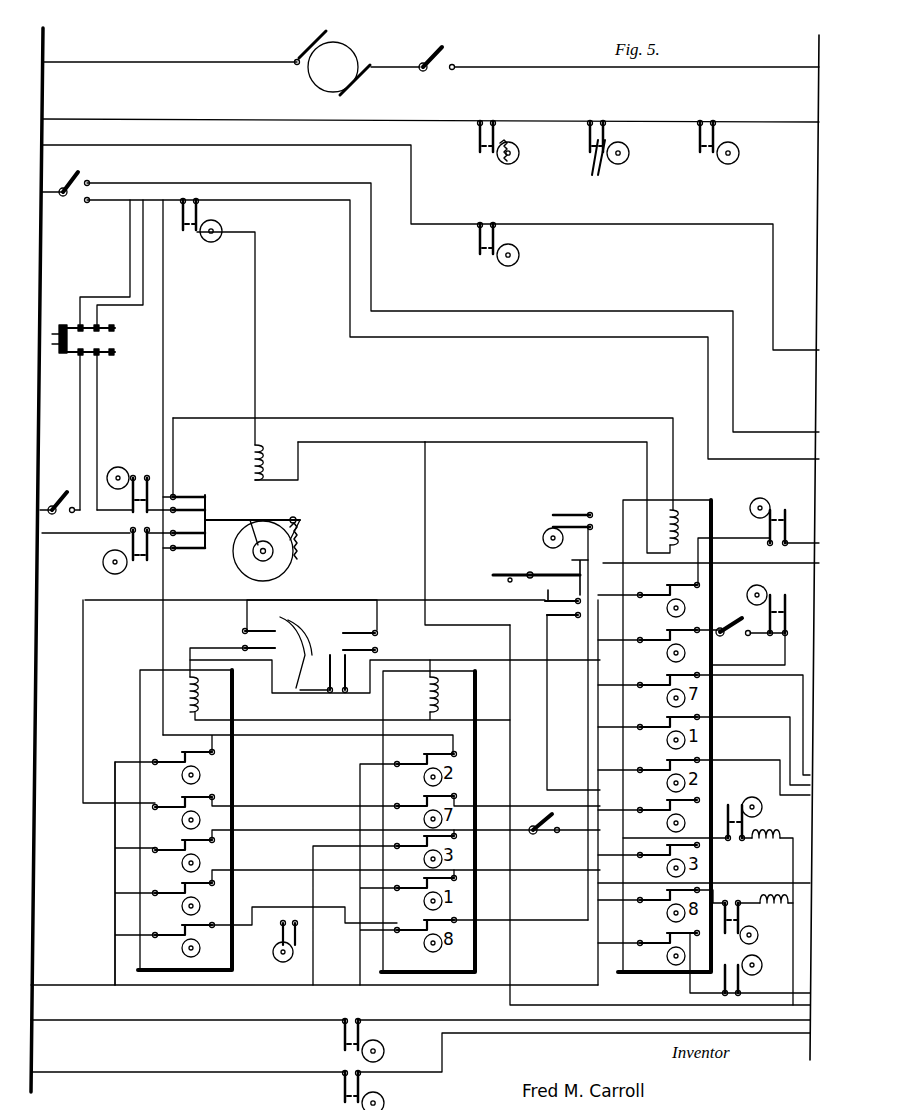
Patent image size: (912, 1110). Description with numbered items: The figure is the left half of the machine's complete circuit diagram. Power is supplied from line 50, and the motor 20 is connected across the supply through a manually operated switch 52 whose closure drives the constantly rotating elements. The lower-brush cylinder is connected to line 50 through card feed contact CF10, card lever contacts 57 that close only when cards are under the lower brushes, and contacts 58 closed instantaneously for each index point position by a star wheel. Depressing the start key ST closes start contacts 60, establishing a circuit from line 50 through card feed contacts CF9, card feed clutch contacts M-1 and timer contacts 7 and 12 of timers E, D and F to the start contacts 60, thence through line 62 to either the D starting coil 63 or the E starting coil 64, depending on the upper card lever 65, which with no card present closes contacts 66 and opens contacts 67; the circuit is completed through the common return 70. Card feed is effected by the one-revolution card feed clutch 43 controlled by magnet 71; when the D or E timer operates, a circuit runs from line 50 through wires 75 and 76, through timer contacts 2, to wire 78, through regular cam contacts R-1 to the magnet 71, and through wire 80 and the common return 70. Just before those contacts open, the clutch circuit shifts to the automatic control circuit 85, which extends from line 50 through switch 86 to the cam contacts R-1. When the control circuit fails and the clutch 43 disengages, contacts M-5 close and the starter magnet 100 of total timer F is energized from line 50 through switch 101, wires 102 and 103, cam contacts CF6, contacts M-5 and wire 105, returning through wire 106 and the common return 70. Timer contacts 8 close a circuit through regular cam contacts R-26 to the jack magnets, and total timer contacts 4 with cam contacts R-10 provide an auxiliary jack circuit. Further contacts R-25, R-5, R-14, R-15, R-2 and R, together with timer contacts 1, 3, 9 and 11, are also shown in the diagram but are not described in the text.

The line 50 is at (45, 44).
The motor 20 is at (345, 55).
The manually operated switch 52 is at (446, 52).
The switch 86 is at (83, 180).
The automatic control circuit 85 is at (588, 311).
The contacts 58 is at (478, 150).
The card lever contacts 57 is at (600, 150).
The card feed contact CF10 is at (738, 155).
The relay contact R-25 is at (516, 245).
The regular cam contacts R-1 is at (208, 268).
The wire 102 is at (79, 398).
The wire 103 is at (97, 398).
The switch 101 is at (56, 495).
The cam contacts CF6 is at (133, 478).
The card feed contacts CF9 is at (131, 563).
The wire 78 is at (160, 625).
The contacts M-5 is at (208, 500).
The card feed clutch contacts M-1 is at (205, 548).
The card feed clutch 43 is at (300, 548).
The card feed clutch magnet 71 is at (270, 462).
The wire 105 is at (515, 418).
The wire 80 is at (341, 442).
The wire 106 is at (512, 442).
The starter magnet 100 is at (692, 525).
The line 62 is at (433, 600).
The regular cam contacts R-26 is at (546, 717).
The start key ST is at (540, 580).
The start contacts 60 is at (572, 695).
The contacts 67 is at (243, 638).
The upper card lever 65 is at (296, 640).
The contacts 66 is at (377, 642).
The E timer E is at (185, 820).
The E starting coil 64 is at (196, 692).
The D timer D is at (428, 821).
The D timer starting coil 63 is at (442, 690).
The total timer F is at (664, 736).
The relay contact 1 is at (184, 898).
The timer contacts 2 is at (184, 767).
The relay contact 3 is at (184, 855).
The total timer contacts 4 is at (669, 600).
The timer contacts 7 is at (184, 812).
The cam contacts 8 is at (184, 940).
The relay contact 9 is at (669, 645).
The relay contact 11 is at (675, 948).
The timer contacts 12 is at (671, 815).
The common return 70 is at (508, 780).
The regular contacts R-10 is at (784, 516).
The relay contact R-5 is at (771, 602).
The relay R-14 is at (758, 888).
The relay R-15 is at (758, 919).
The wire 76 is at (113, 850).
The wire 75 is at (60, 983).
The relay contact R-2 is at (378, 1041).
The relay R is at (370, 1091).